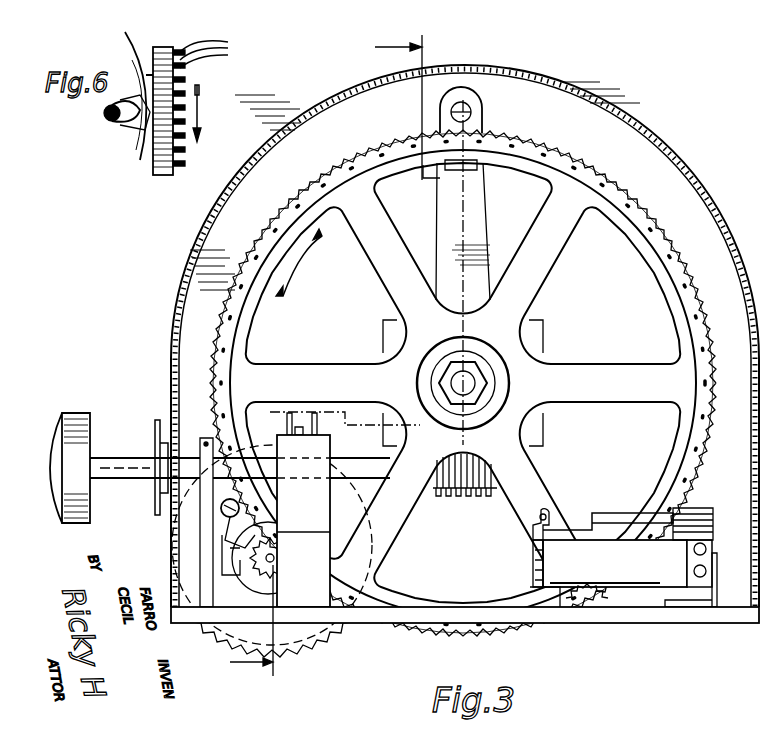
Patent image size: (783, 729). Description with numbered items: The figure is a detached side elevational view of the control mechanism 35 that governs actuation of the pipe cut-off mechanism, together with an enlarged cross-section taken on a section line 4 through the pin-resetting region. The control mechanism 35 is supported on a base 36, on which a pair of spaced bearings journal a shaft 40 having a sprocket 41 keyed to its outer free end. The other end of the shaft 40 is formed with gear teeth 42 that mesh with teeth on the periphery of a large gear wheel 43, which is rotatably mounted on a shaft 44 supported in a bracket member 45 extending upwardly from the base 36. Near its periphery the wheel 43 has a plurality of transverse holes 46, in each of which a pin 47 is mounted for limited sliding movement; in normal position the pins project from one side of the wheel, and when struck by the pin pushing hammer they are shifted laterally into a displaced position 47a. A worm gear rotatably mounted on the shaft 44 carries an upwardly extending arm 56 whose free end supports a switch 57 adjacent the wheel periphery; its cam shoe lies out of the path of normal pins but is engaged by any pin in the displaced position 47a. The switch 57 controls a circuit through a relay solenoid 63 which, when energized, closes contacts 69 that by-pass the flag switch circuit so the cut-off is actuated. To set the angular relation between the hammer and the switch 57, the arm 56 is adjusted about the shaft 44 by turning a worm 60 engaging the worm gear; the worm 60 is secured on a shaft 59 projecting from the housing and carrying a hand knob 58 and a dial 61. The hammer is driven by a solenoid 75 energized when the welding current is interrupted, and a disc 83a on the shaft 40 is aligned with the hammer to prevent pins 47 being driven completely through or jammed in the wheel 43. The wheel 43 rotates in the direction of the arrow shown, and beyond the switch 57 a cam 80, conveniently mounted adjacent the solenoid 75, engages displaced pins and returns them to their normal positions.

In FIG. 3, the section line 4 is at (326, 358).
In FIG. 3, the control mechanism 35 is at (652, 137).
In FIG. 3, the base 36 is at (640, 608).
In FIG. 3, the shaft 40 is at (275, 563).
In FIG. 3, the sprocket 41 is at (327, 630).
In FIG. 3, the gear teeth 42 is at (268, 558).
In FIG. 3, the gear wheel 43 is at (240, 330).
In FIG. 6, the gear wheel 43 is at (158, 178).
In FIG. 3, the shaft 44 is at (468, 385).
In FIG. 3, the bracket member 45 is at (515, 563).
In FIG. 3, the transverse holes 46 is at (627, 217).
In FIG. 3, the pin 47 is at (672, 262).
In FIG. 6, the pin 47 is at (218, 52).
In FIG. 6, the displaced position 47a is at (124, 86).
In FIG. 3, the arm 56 is at (472, 208).
In FIG. 3, the switch 57 is at (468, 172).
In FIG. 3, the hand knob 58 is at (78, 413).
In FIG. 3, the shaft 59 is at (128, 465).
In FIG. 3, the worm 60 is at (457, 497).
In FIG. 3, the dial 61 is at (156, 420).
In FIG. 3, the relay solenoid 63 is at (623, 557).
In FIG. 3, the contacts 69 is at (592, 513).
In FIG. 3, the solenoid 75 is at (325, 509).
In FIG. 3, the cam 80 is at (225, 528).
In FIG. 6, the cam 80 is at (138, 158).
In FIG. 3, the disc 83a is at (236, 568).